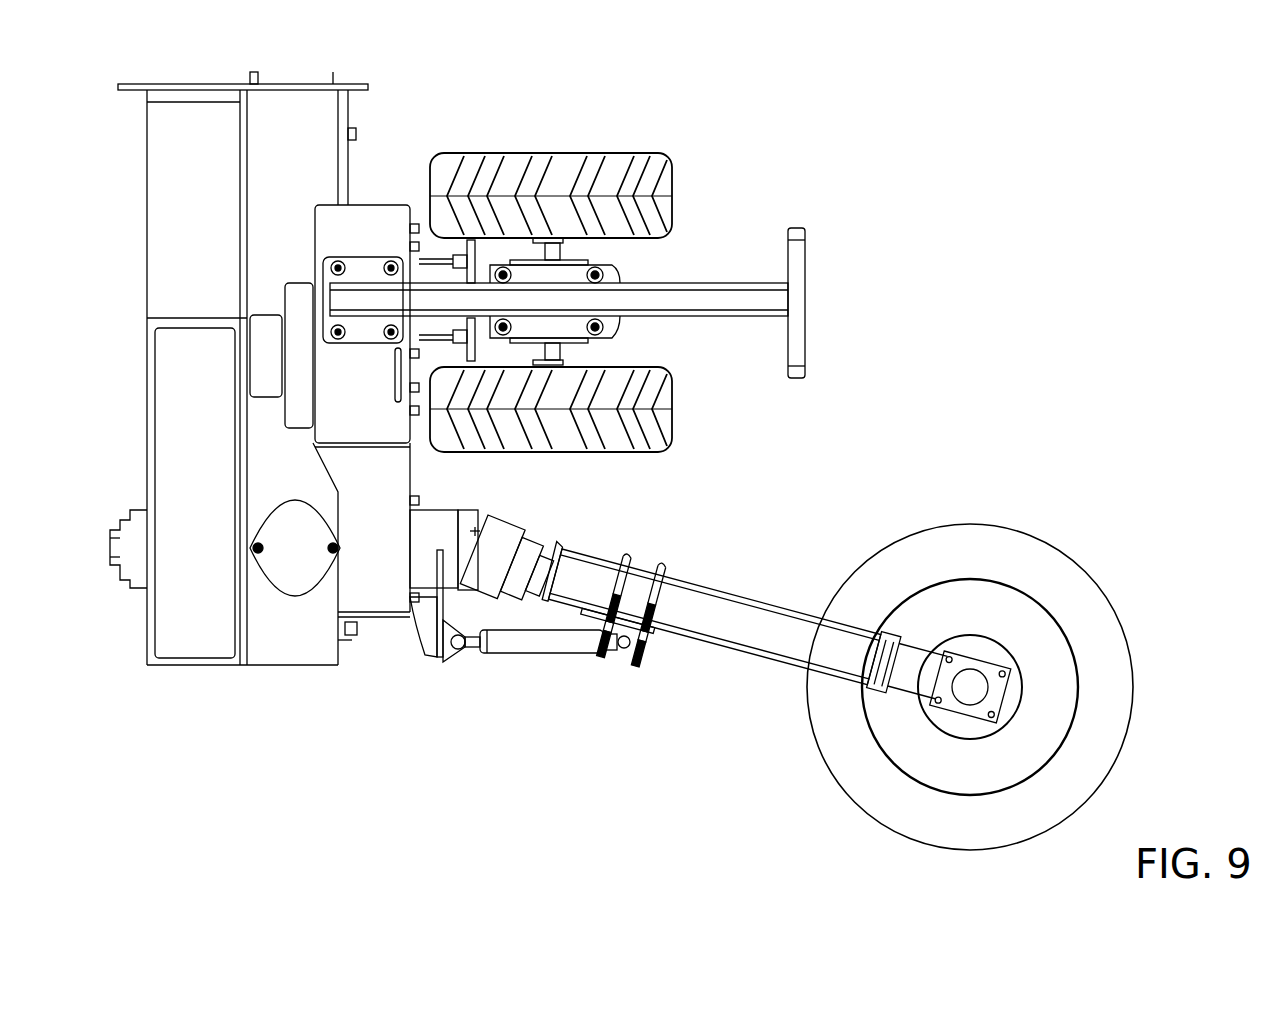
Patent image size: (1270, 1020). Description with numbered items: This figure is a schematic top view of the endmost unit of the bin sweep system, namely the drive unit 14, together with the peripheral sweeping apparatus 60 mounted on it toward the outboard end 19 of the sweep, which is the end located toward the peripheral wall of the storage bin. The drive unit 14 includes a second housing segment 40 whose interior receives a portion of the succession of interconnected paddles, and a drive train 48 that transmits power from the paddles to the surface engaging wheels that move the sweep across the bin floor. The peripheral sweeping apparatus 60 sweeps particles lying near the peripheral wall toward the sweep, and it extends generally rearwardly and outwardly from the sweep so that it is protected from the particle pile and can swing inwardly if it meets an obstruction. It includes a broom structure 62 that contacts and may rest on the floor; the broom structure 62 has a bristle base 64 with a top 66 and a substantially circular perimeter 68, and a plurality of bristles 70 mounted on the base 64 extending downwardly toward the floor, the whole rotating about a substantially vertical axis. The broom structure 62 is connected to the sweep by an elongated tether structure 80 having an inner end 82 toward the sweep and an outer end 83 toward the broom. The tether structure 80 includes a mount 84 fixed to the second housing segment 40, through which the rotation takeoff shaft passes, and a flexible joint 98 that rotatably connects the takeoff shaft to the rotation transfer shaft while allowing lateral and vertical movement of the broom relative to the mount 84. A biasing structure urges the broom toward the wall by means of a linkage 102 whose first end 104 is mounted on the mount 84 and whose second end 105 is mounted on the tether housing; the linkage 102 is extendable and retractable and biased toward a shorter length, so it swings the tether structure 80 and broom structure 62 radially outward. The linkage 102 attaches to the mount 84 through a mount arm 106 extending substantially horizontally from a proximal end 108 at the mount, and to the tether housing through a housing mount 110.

The drive unit 14 is at (350, 707).
The outboard end 19 is at (165, 692).
The second housing segment 40 is at (185, 257).
The drive train 48 is at (381, 184).
The peripheral sweeping apparatus 60 is at (1011, 608).
The broom structure 62 is at (1100, 548).
The bristle base 64 is at (1045, 657).
The top 66 is at (1055, 682).
The perimeter 68 is at (1082, 707).
The bristles 70 is at (1117, 765).
The tether structure 80 is at (689, 541).
The inner end 82 is at (511, 487).
The outer end 83 is at (956, 730).
The mount 84 is at (425, 527).
The flexible joint 98 is at (530, 540).
The linkage 102 is at (550, 657).
The first end 104 is at (445, 657).
The second end 105 is at (617, 653).
The mount arm 106 is at (415, 628).
The proximal end 108 is at (427, 657).
The housing mount 110 is at (647, 637).